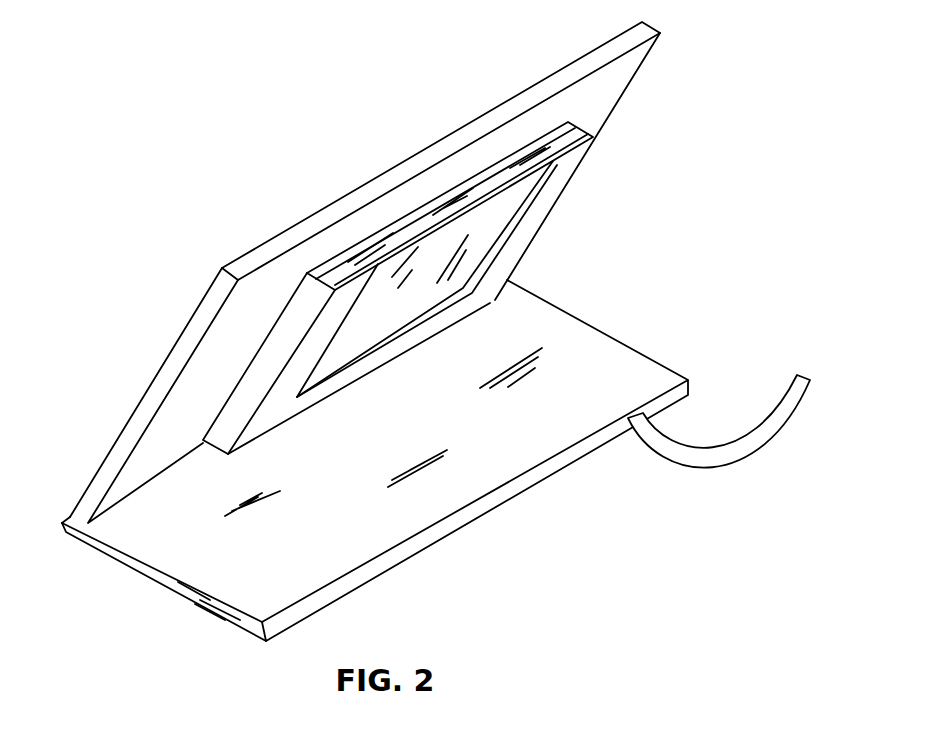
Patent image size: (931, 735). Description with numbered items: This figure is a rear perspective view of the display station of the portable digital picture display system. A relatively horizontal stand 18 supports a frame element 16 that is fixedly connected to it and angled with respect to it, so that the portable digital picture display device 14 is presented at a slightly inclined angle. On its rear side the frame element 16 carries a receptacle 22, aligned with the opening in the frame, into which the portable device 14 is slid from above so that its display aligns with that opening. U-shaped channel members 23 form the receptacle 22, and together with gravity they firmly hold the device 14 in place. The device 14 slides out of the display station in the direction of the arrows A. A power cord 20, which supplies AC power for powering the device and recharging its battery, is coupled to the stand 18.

The portable digital picture display device 14 is at (420, 220).
The frame element 16 is at (126, 430).
The stand 18 is at (157, 572).
The power cord 20 is at (782, 418).
The receptacle 22 is at (443, 282).
The U-shaped channel members 23 is at (308, 297).
The arrows A is at (490, 157).